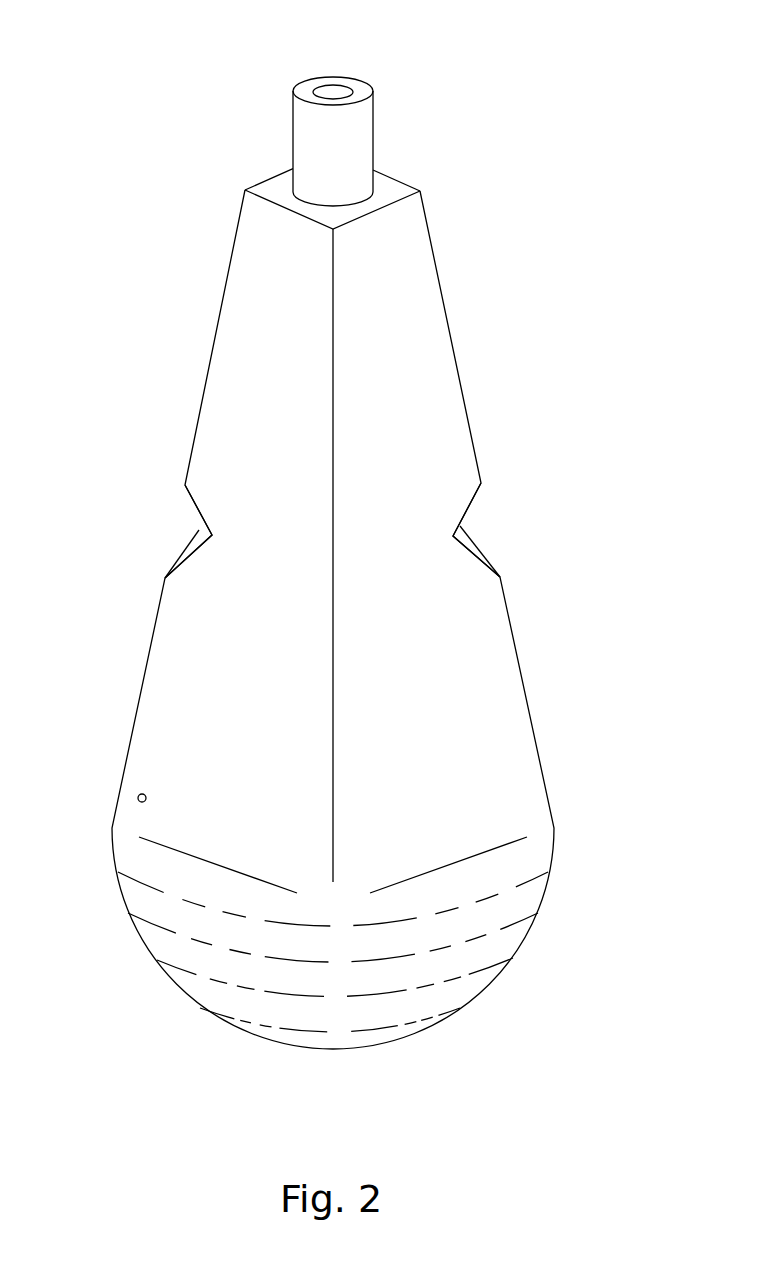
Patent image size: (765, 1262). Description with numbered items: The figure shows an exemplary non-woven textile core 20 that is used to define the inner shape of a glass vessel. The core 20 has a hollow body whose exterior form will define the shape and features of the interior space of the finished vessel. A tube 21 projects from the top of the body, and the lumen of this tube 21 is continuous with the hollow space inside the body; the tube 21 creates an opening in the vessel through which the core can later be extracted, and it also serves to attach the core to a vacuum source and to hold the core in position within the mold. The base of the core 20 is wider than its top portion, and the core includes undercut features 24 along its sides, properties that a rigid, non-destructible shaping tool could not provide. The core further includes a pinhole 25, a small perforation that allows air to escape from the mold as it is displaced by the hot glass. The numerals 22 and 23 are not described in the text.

The non-woven textile core 20 is at (248, 333).
The tube 21 is at (375, 140).
The axial hole 22 is at (332, 93).
The notch 23 is at (332, 530).
The undercut features 24 is at (200, 537).
The pinhole 25 is at (135, 797).